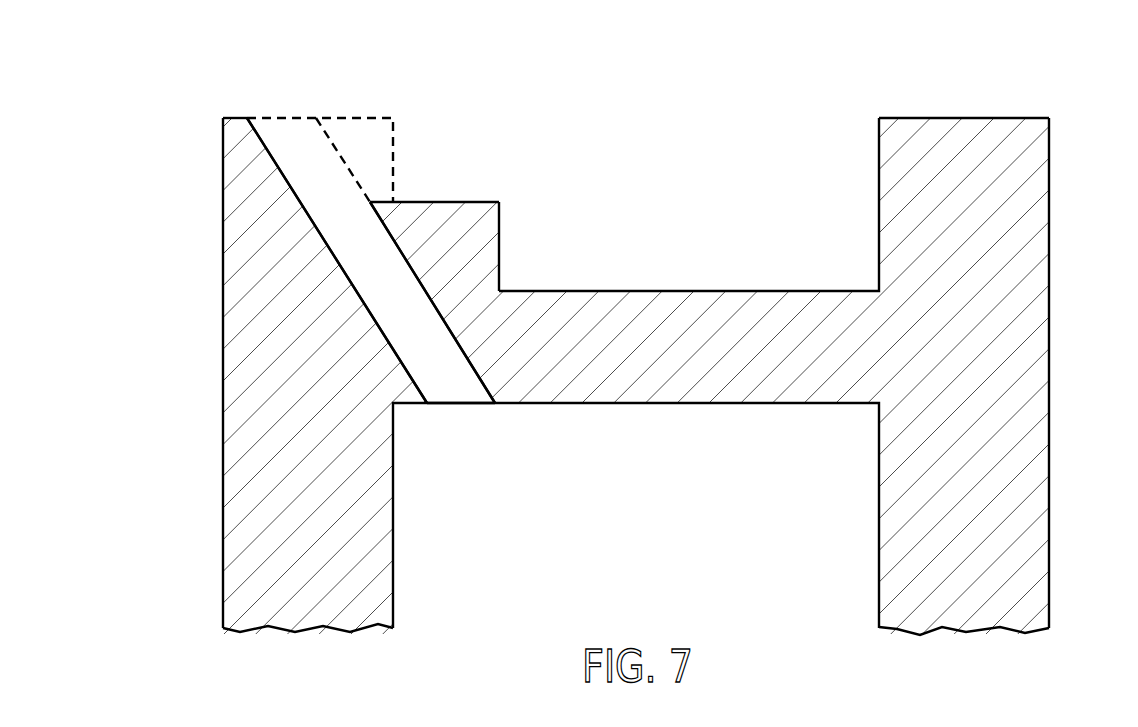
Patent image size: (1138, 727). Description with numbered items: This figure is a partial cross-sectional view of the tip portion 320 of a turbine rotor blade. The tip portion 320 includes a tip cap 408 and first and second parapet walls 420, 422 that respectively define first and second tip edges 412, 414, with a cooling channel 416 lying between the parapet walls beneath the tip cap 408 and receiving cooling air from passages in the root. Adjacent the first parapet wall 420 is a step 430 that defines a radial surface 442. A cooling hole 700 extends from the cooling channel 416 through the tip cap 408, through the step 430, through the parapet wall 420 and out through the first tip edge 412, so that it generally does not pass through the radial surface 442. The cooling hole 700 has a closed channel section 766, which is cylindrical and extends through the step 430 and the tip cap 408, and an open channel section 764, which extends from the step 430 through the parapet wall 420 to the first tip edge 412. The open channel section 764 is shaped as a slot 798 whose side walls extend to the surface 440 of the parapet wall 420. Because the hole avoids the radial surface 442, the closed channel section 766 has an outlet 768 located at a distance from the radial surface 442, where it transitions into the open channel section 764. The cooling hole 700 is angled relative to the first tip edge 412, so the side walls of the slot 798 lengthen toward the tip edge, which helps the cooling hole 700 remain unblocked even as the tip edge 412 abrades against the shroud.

The tip portion 320 is at (182, 97).
The cooling hole 700 is at (295, 133).
The first tip edge 412 is at (232, 117).
The second tip edge 414 is at (955, 117).
The cooling channel 416 is at (642, 555).
The first parapet wall 420 is at (240, 193).
The second parapet wall 422 is at (1017, 242).
The step 430 is at (475, 245).
The surface of the parapet wall 440 is at (395, 128).
The radial surface 442 is at (492, 202).
The tip cap 408 is at (690, 315).
The open channel section 764 is at (333, 170).
The closed channel section 766 is at (452, 378).
The outlet 768 is at (343, 200).
The slot 798 is at (325, 130).